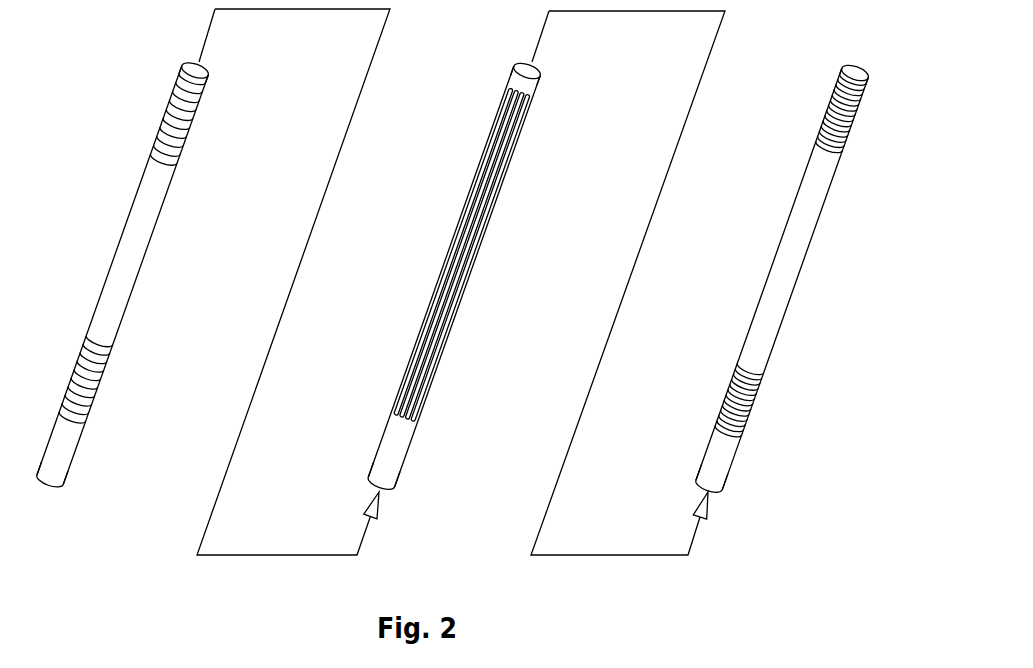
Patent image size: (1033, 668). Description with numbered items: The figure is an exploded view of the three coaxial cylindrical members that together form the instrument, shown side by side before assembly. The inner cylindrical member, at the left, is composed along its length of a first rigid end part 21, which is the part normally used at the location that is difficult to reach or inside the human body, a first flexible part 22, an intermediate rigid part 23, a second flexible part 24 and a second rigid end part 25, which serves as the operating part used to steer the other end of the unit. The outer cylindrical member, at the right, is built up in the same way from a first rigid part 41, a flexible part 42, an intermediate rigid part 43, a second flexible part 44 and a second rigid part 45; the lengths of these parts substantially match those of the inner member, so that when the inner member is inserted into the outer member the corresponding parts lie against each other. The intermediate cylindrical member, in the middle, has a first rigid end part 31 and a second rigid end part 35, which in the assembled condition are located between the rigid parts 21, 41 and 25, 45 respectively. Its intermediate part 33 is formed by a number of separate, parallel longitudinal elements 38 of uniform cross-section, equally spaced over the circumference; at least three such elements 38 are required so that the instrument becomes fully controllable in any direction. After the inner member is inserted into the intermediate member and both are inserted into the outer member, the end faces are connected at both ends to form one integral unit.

The first rigid end part 21 is at (204, 83).
The first flexible part 22 is at (183, 143).
The intermediate rigid part 23 is at (138, 263).
The second flexible part 24 is at (98, 384).
The second rigid end part 25 is at (69, 459).
The first rigid end part 31 is at (536, 87).
The intermediate part 33 is at (458, 303).
The longitudinal elements 38 is at (430, 357).
The second rigid end part 35 is at (398, 461).
The first rigid part 41 is at (838, 81).
The flexible part 42 is at (823, 129).
The intermediate rigid part 43 is at (788, 250).
The second flexible part 44 is at (728, 399).
The second rigid part 45 is at (711, 454).